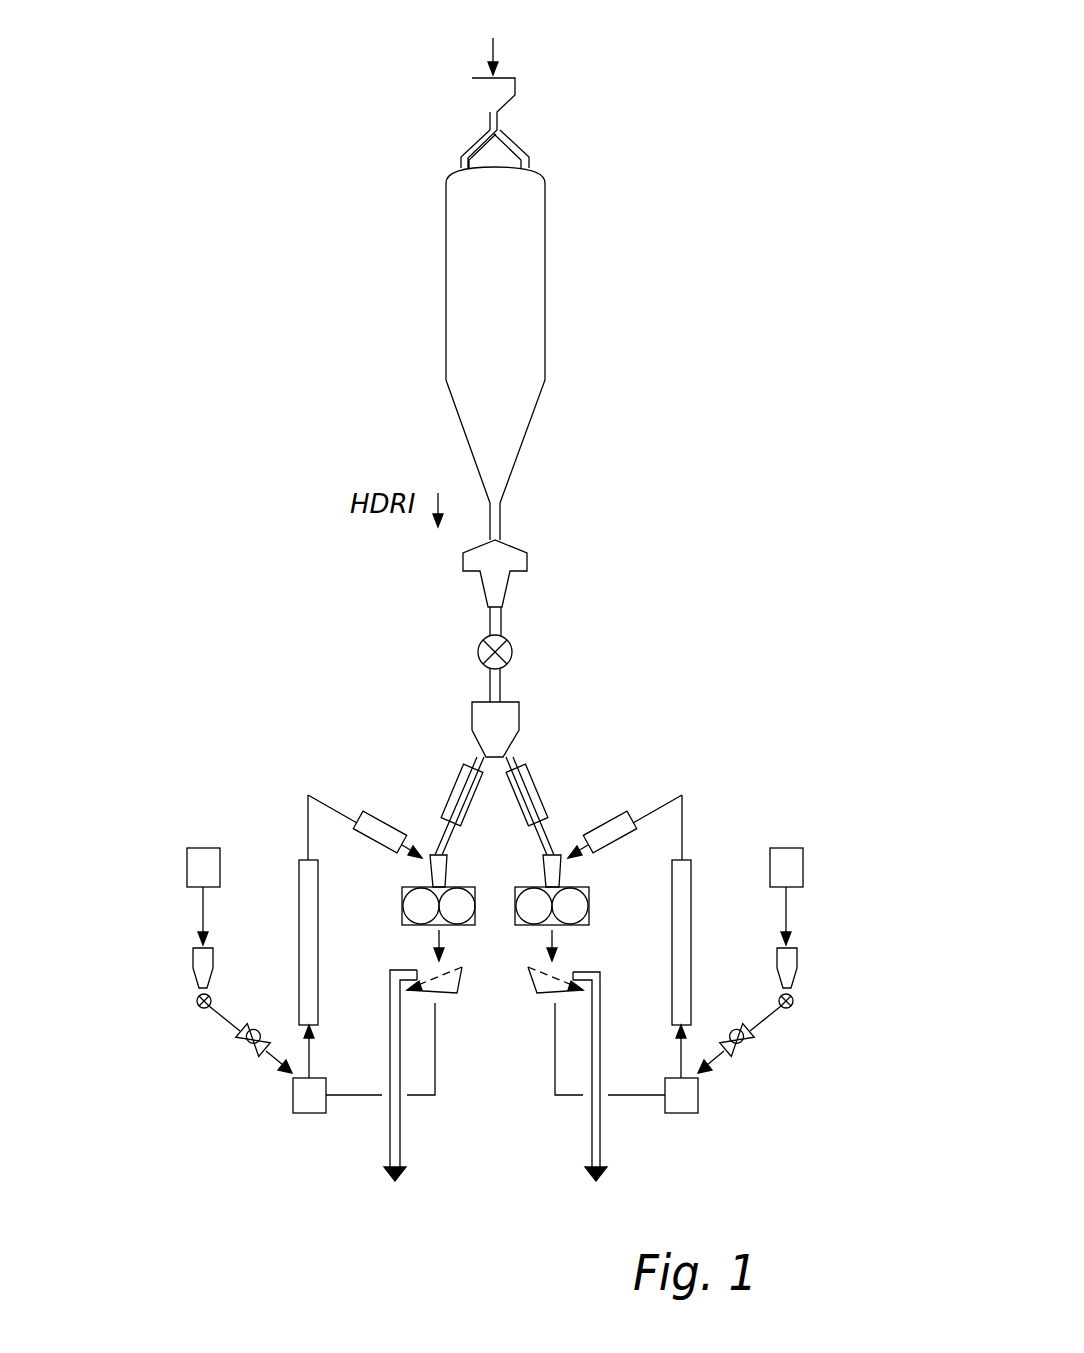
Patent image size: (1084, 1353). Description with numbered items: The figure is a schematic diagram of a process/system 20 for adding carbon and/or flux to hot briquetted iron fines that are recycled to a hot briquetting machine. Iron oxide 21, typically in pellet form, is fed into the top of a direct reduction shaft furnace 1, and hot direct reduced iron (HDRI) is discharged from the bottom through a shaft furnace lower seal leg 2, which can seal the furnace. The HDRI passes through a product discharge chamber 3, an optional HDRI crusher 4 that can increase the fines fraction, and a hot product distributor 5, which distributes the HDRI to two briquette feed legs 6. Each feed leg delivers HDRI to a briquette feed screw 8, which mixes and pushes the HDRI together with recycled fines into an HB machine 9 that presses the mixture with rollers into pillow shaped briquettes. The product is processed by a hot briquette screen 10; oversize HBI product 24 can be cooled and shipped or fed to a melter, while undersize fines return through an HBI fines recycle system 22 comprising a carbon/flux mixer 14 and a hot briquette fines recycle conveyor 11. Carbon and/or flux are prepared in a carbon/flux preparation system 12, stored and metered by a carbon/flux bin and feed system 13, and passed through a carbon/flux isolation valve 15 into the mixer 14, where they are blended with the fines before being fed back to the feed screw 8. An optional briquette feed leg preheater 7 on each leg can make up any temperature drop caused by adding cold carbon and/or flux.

The direct reduction shaft furnace 1 is at (525, 298).
The shaft furnace lower seal leg 2 is at (500, 525).
The product discharge chamber 3 is at (527, 560).
The HDRI crusher 4 is at (512, 652).
The hot product distributor 5 is at (519, 712).
The briquette feed leg 6 is at (545, 830).
The briquette feed leg preheater 7 is at (450, 785).
The briquette feed screw 8 is at (447, 878).
The HB machine 9 is at (470, 927).
The hot briquette screen 10 is at (457, 985).
The hot briquette fines recycle conveyor 11 is at (313, 937).
The carbon/flux preparation system 12 is at (205, 850).
The carbon/flux bin and feed system 13 is at (193, 965).
The carbon/flux mixer 14 is at (293, 1113).
The carbon/flux isolation valve 15 is at (255, 1035).
The process/system 20 is at (222, 324).
The iron oxide 21 is at (495, 85).
The HBI fines recycle system 22 is at (315, 790).
The oversize HBI product 24 is at (495, 1094).